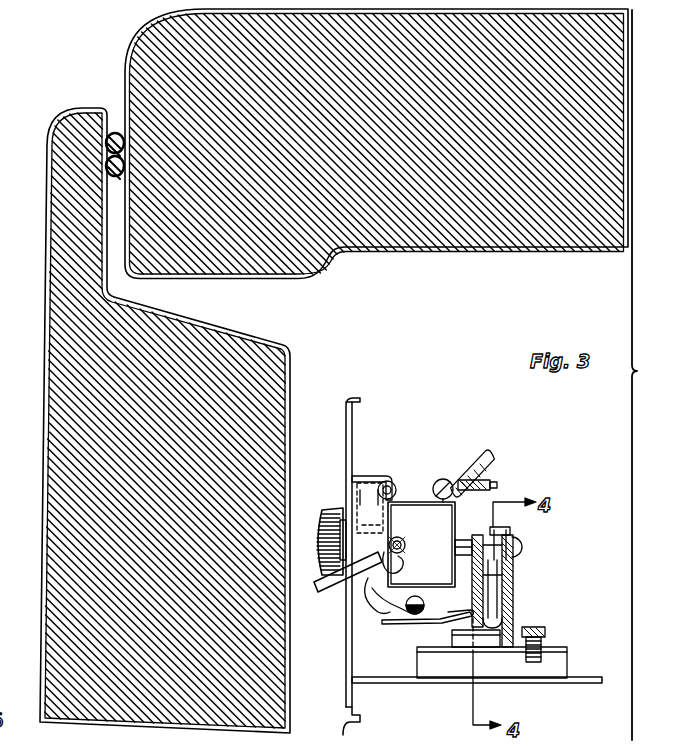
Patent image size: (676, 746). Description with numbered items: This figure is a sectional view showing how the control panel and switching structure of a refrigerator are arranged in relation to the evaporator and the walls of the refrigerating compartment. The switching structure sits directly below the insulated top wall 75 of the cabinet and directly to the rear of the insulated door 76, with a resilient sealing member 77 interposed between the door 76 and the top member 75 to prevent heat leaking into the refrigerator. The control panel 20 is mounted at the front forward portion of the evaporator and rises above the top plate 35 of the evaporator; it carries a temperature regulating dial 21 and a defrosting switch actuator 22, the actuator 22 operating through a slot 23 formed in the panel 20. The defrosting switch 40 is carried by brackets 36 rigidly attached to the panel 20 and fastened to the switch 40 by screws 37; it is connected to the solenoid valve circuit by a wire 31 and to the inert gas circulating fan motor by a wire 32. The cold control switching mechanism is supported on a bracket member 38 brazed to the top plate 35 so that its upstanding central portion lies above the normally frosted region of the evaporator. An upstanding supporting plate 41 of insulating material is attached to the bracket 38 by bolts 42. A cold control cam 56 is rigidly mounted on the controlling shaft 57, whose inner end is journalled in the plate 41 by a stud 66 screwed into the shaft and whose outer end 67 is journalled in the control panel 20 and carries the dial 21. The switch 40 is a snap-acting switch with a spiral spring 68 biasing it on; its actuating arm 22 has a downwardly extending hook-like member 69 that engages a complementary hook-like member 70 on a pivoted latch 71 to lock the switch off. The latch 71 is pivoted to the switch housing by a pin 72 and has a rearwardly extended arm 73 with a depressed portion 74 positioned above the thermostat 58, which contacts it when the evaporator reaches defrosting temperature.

The control panel 20 is at (345, 416).
The temperature regulating dial 21 is at (333, 508).
The defrosting switch actuator 22 is at (321, 593).
The slot 23 is at (345, 507).
The wire 31 is at (470, 465).
The wire 32 is at (485, 480).
The top plate of the evaporator 35 is at (590, 685).
The brackets 36 is at (357, 477).
The screws 37 is at (391, 481).
The bracket member 38 is at (435, 653).
The switch 40 is at (412, 505).
The supporting plate 41 is at (515, 585).
The bolts 42 is at (543, 629).
The cold control cam 56 is at (503, 530).
The controlling shaft 57 is at (465, 540).
The thermostat 58 is at (476, 652).
The stud 66 is at (524, 547).
The outer end of shaft 67 is at (370, 508).
The spiral spring 68 is at (405, 545).
The hook-like member 69 is at (399, 566).
The hook-like member 70 is at (368, 596).
The pivoted latch 71 is at (381, 612).
The pin 72 is at (416, 596).
The rearwardly extended arm 73 is at (430, 621).
The depressed portion 74 is at (458, 618).
The insulated top wall 75 is at (437, 250).
The insulated door 76 is at (300, 378).
The resilient sealing member 77 is at (120, 120).